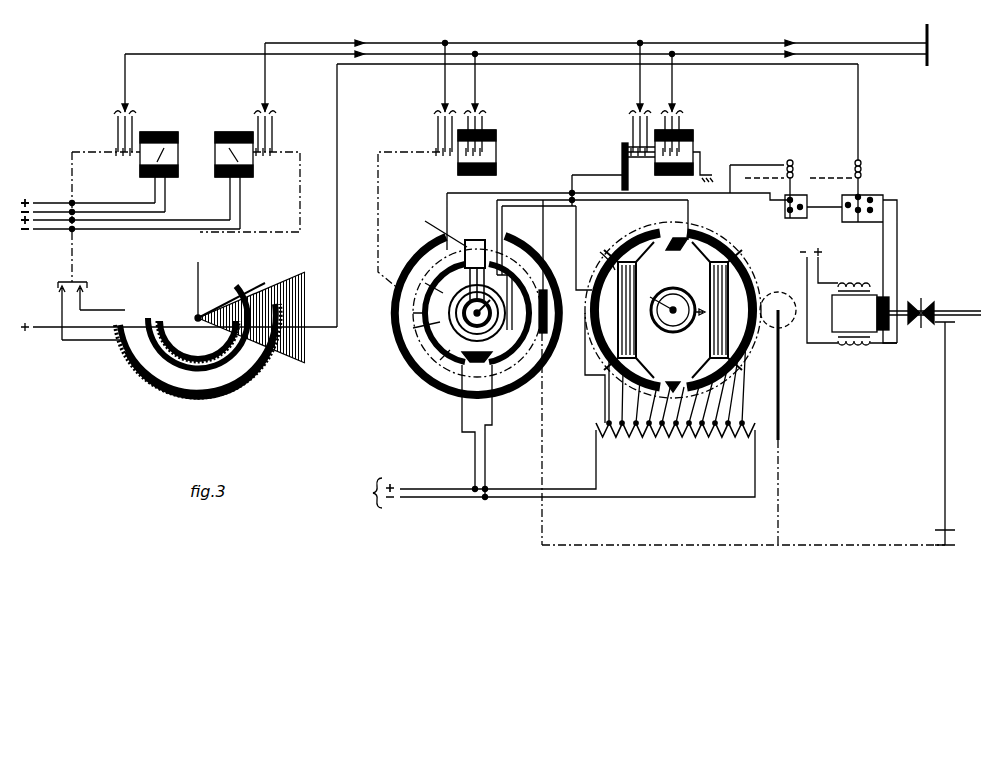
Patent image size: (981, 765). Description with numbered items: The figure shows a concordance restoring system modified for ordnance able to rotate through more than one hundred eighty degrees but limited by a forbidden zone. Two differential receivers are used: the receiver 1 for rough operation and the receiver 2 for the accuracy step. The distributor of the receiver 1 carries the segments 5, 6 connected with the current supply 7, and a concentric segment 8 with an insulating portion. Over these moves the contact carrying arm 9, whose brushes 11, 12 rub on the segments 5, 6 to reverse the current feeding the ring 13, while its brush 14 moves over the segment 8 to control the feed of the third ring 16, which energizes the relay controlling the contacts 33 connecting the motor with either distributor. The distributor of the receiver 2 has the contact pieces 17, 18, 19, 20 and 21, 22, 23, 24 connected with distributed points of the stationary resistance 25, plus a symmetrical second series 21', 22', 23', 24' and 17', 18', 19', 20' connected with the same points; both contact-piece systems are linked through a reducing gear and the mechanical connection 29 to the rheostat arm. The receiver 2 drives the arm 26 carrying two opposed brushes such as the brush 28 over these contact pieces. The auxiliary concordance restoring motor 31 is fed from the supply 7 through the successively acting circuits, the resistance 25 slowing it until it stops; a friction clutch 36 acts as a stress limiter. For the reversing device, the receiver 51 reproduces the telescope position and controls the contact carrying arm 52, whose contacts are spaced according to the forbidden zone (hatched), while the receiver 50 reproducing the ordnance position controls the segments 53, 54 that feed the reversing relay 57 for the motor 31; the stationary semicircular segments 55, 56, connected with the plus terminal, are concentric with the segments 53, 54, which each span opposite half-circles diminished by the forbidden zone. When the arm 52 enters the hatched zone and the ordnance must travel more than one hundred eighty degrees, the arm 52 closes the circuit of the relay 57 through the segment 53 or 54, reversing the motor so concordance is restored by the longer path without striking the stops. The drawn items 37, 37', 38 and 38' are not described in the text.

The differential receiver 1 is at (498, 146).
The differential receiver 2 is at (695, 143).
The segment 5 is at (456, 372).
The segment 6 is at (495, 385).
The current supply 7 is at (554, 469).
The segment 8 is at (422, 282).
The contact carrying arm 9 is at (425, 221).
The brush 11 is at (440, 360).
The brush 12 is at (440, 275).
The ring 13 is at (413, 328).
The brush 14 is at (473, 256).
The third ring 16 is at (512, 348).
The contact piece 17 is at (673, 310).
The contact piece 18 is at (738, 243).
The contact piece 19 is at (748, 253).
The contact piece 20 is at (760, 264).
The contact piece 21 is at (701, 292).
The contact piece 22 is at (647, 225).
The contact piece 23 is at (629, 295).
The contact piece 24 is at (600, 252).
The resistance 25 is at (686, 440).
The arm 26 is at (668, 348).
The contact brush 28 is at (682, 372).
The mechanical connection 29 is at (571, 548).
The auxiliary concordance restoring motor 31 is at (848, 296).
The contacts 33 is at (802, 207).
The friction clutch 36 is at (912, 302).
The relay coil 37 is at (685, 222).
The brush 38 is at (689, 229).
The receiver 50 is at (170, 132).
The receiver 51 is at (230, 132).
The contact carrying arm 52 is at (202, 306).
The segment 53 is at (192, 306).
The segment 54 is at (128, 378).
The stationary semicircular segment 55 is at (138, 266).
The stationary semicircular segment 56 is at (172, 353).
The reversing relay 57 is at (883, 193).
The contact piece 17' is at (635, 451).
The contact piece 18' is at (606, 406).
The contact piece 19' is at (588, 396).
The contact piece 20' is at (587, 368).
The contact piece 21' is at (709, 450).
The contact piece 22' is at (728, 462).
The contact piece 23' is at (779, 402).
The contact piece 24' is at (779, 378).
The brush 37' is at (671, 408).
The resistor tap 38' is at (671, 451).